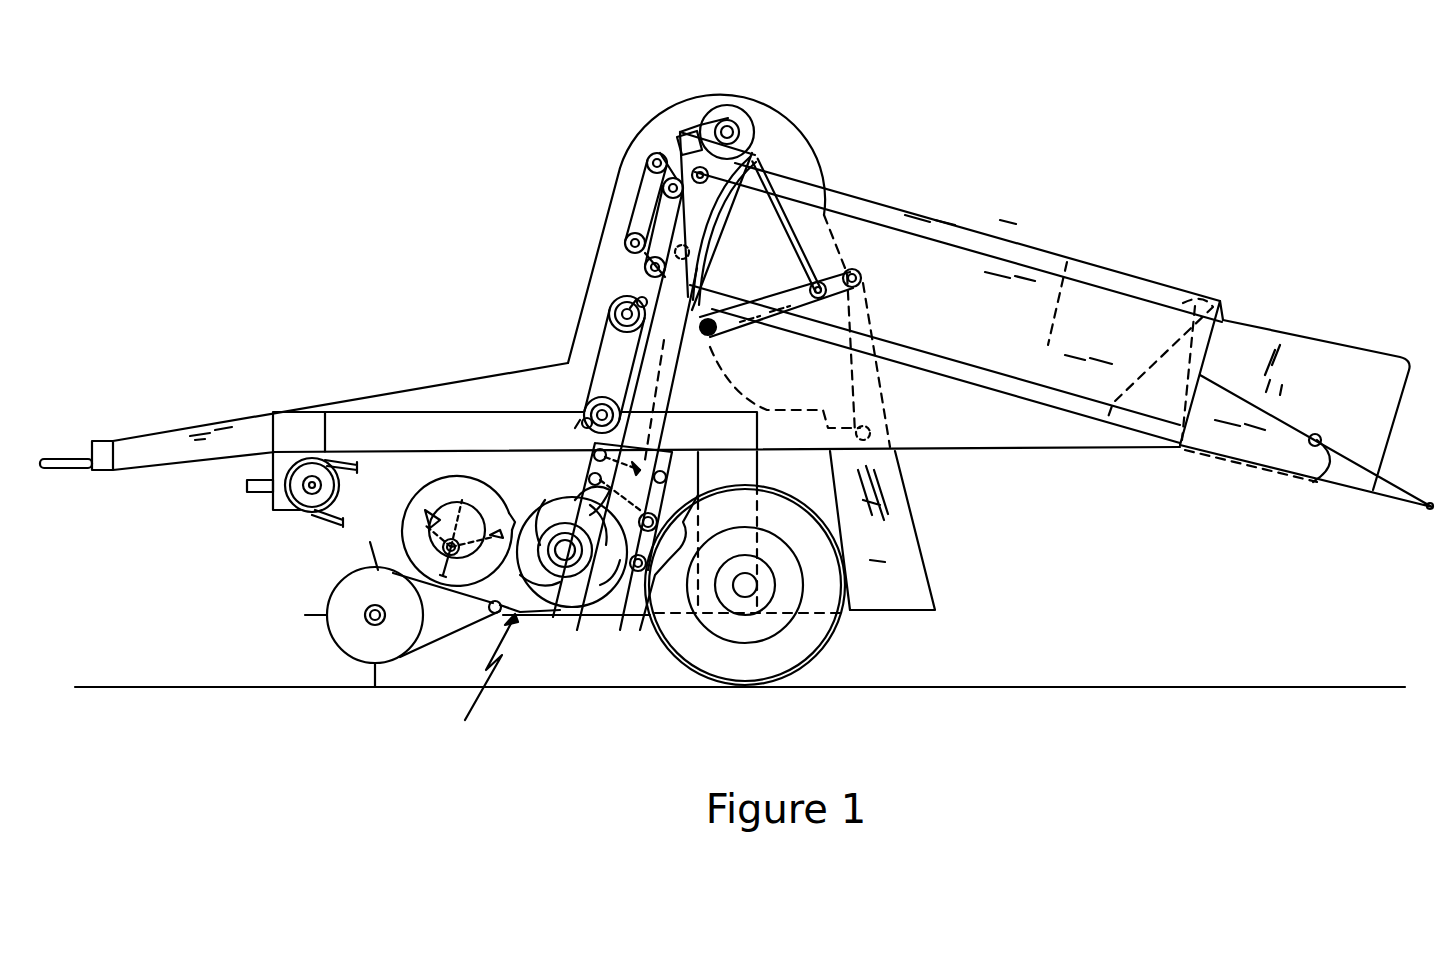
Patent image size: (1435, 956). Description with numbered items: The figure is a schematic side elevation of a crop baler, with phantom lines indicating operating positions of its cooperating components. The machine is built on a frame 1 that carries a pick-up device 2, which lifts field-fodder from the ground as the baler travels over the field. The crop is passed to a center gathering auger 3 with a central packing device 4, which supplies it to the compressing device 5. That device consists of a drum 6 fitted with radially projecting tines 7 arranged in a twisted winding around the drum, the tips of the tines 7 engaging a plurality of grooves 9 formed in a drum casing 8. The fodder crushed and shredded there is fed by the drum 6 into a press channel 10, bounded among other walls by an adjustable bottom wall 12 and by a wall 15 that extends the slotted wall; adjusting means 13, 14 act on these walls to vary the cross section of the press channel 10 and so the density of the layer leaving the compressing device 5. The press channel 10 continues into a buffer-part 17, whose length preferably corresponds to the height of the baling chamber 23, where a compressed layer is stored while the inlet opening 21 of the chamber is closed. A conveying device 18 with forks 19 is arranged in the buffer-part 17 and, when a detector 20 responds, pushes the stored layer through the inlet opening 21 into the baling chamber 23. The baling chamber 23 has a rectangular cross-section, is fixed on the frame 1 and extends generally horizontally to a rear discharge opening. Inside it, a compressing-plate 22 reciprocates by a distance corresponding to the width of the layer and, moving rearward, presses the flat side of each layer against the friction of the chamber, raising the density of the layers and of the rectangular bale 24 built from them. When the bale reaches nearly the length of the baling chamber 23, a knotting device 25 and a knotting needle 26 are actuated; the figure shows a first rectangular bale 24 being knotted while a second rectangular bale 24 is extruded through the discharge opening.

The frame 1 is at (242, 433).
The pick-up device 2 is at (345, 640).
The center gathering auger 3 is at (418, 523).
The central packing device 4 is at (445, 546).
The compressing device 5 is at (487, 680).
The drum 6 is at (550, 580).
The tines 7 is at (585, 578).
The drum casing 8 is at (607, 585).
The grooves 9 is at (610, 580).
The press channel 10 is at (660, 448).
The adjustable bottom wall 12 is at (678, 580).
The adjusting means 13 is at (655, 600).
The adjusting means 14 is at (589, 480).
The wall 15 is at (594, 456).
The buffer-part 17 is at (645, 358).
The conveying device 18 is at (608, 327).
The forks 19 is at (637, 298).
The detector 20 is at (718, 343).
The inlet opening 21 is at (660, 288).
The compressing-plate 22 is at (677, 210).
The baling chamber 23 is at (820, 225).
The rectangular bale 24 is at (987, 280).
The knotting device 25 is at (740, 118).
The knotting needle 26 is at (760, 150).